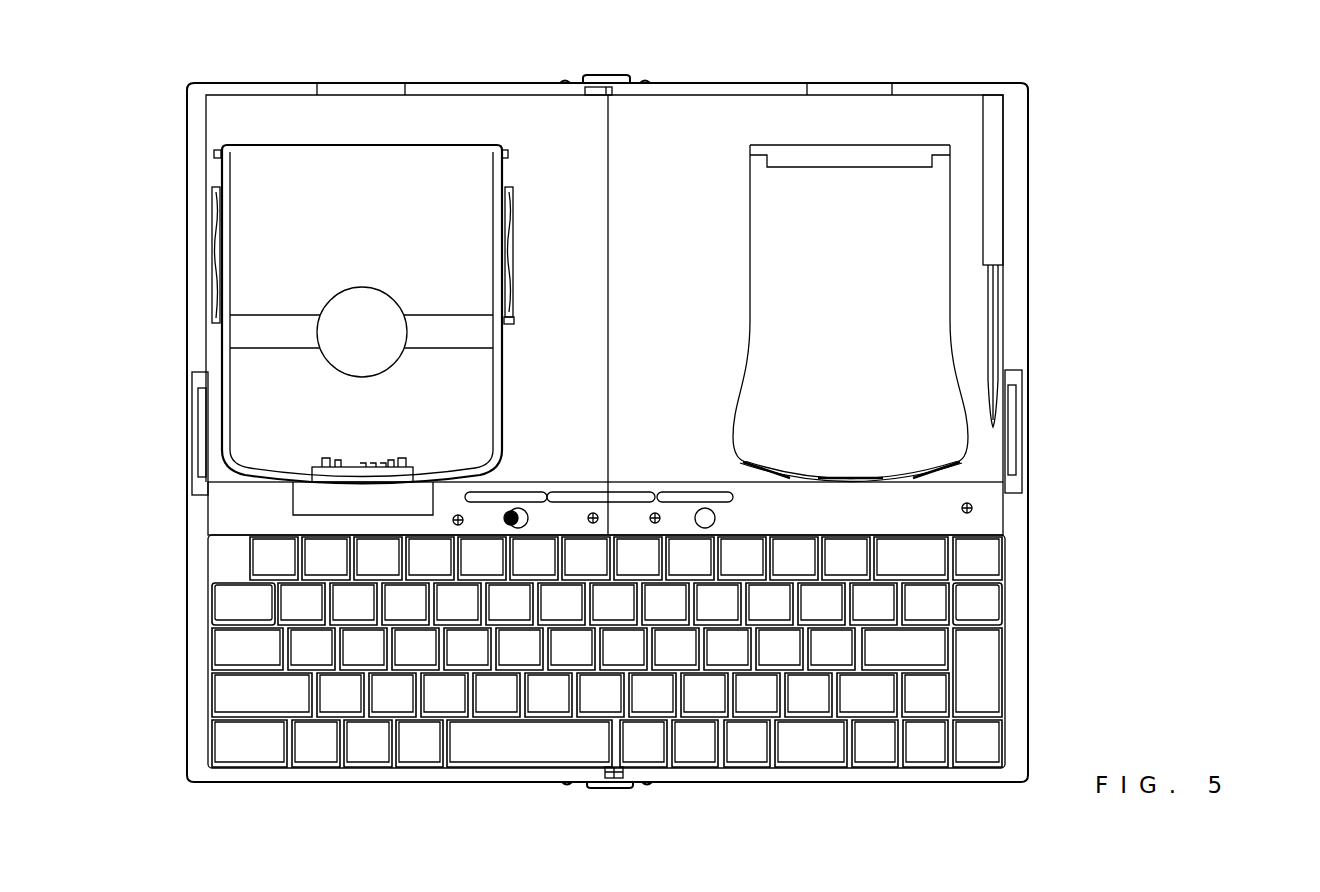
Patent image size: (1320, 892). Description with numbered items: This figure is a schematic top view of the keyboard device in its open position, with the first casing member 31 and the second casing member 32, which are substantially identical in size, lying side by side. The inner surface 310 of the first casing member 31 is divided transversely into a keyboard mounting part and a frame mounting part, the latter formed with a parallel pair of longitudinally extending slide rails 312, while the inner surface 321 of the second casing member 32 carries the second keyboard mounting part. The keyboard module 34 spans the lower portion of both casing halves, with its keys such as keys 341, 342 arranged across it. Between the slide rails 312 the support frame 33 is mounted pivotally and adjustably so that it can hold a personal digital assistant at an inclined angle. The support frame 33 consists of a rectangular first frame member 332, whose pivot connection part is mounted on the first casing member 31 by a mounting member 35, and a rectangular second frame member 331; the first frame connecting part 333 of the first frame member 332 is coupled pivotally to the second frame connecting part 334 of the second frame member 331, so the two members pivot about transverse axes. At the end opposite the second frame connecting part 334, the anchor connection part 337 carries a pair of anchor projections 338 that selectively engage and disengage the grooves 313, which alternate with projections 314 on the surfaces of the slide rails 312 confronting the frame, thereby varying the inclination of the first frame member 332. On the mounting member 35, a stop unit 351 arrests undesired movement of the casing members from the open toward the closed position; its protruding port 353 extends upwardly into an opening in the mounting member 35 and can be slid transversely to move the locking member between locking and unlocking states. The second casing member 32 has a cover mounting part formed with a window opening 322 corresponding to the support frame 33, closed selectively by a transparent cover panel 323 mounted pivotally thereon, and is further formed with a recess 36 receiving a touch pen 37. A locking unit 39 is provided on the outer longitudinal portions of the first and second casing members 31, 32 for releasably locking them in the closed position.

The first casing member 31 is at (195, 158).
The second casing member 32 is at (1027, 290).
The inner surface 310 is at (370, 103).
The inner surface 321 is at (853, 115).
The support frame 33 is at (409, 312).
The first frame connecting part 333 is at (348, 175).
The second frame member 331 is at (482, 242).
The anchor connection part 337 is at (265, 145).
The anchor projections 338 is at (505, 157).
The slide rails 312 is at (513, 207).
The grooves 313 is at (507, 290).
The projections 314 is at (508, 317).
The second frame connecting part 334 is at (447, 317).
The first frame member 332 is at (455, 431).
The window opening 322 is at (918, 313).
The transparent cover panel 323 is at (940, 370).
The recess 36 is at (993, 150).
The touch pen 37 is at (992, 278).
The mounting member 35 is at (570, 483).
The stop unit 351 is at (550, 513).
The protruding port 353 is at (512, 508).
The locking unit 39 is at (205, 437).
The keyboard module 34 is at (619, 696).
The left key 341 is at (237, 600).
The right key 342 is at (978, 600).